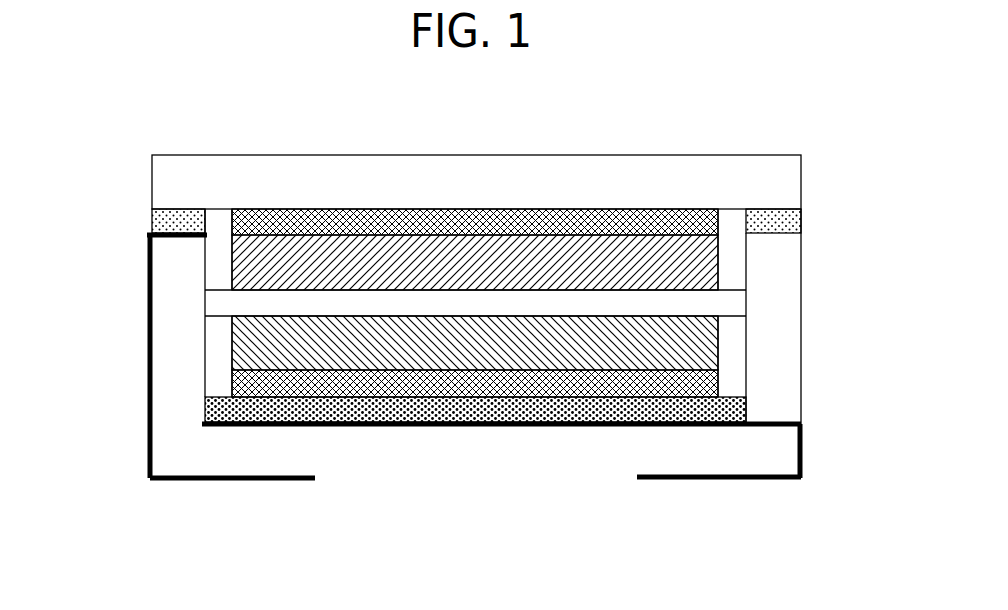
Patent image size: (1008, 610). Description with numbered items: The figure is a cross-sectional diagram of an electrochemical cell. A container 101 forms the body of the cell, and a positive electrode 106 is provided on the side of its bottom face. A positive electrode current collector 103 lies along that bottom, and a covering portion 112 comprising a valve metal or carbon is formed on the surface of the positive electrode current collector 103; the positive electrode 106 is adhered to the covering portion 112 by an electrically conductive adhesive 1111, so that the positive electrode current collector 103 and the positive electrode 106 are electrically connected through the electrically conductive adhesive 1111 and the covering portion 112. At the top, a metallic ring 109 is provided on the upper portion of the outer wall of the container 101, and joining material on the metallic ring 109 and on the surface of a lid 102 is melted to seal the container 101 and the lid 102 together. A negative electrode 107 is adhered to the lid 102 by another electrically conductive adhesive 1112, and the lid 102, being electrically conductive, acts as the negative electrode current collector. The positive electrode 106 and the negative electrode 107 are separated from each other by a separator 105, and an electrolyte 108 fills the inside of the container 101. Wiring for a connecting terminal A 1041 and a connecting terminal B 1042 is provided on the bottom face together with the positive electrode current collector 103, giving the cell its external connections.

The container 101 is at (178, 317).
The lid 102 is at (343, 180).
The positive electrode current collector 103 is at (612, 425).
The separator 105 is at (572, 300).
The positive electrode 106 is at (667, 343).
The negative electrode 107 is at (677, 258).
The electrolyte 108 is at (222, 370).
The metallic ring 109 is at (773, 218).
The covering portion 112 is at (405, 413).
The connecting terminal A 1041 is at (723, 480).
The connecting terminal B 1042 is at (187, 480).
The electrically conductive adhesive 1111 is at (507, 388).
The electrically conductive adhesive 1112 is at (248, 216).